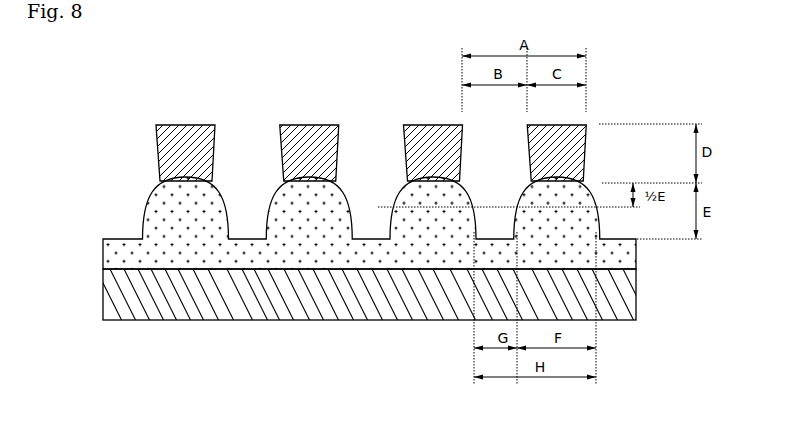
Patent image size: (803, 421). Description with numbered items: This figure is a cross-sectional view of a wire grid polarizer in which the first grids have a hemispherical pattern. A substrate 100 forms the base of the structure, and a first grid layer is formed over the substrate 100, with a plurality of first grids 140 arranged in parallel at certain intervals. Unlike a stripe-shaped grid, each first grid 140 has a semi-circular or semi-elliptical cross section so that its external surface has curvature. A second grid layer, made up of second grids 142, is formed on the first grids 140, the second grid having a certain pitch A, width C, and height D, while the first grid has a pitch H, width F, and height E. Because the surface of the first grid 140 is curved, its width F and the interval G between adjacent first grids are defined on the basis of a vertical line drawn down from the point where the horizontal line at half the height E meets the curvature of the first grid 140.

The substrate 100 is at (103, 300).
The first grid 140 is at (148, 217).
The electrode pattern on bank 142 is at (157, 160).